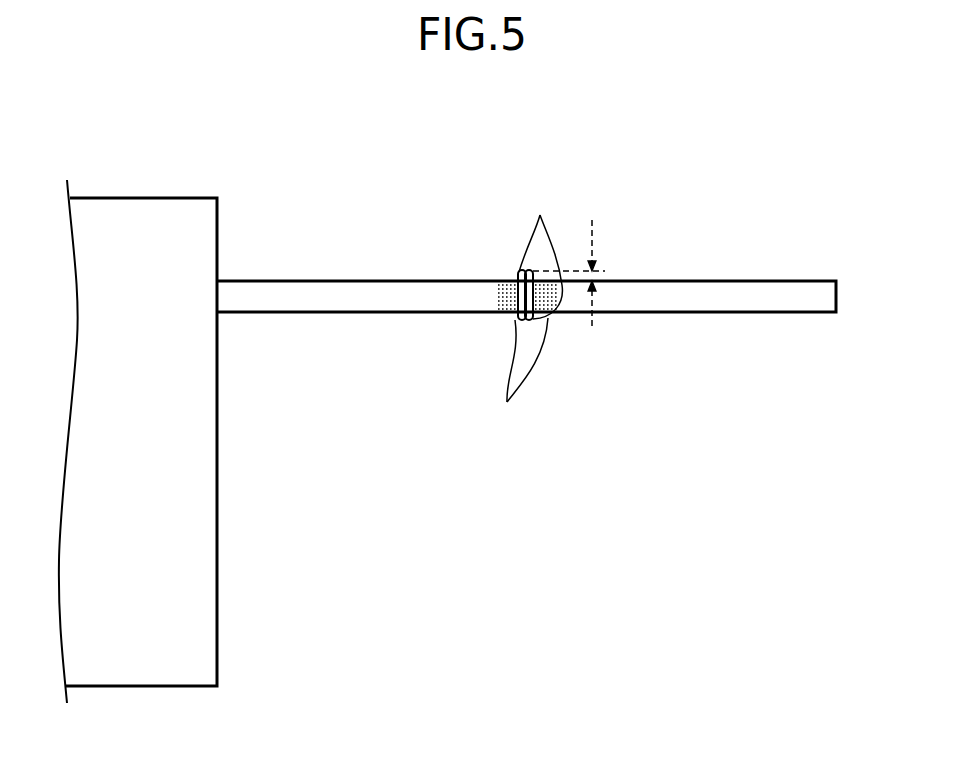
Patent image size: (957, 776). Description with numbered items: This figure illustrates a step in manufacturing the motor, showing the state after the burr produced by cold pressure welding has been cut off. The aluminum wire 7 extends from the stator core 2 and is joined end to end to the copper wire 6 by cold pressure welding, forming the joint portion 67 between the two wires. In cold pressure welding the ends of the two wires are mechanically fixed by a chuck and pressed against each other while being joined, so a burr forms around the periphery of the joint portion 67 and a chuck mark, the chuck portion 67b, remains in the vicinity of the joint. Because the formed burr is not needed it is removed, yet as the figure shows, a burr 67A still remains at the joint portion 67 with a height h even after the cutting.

The stator core 2 is at (174, 208).
The aluminum wire 7 is at (358, 305).
The copper wire 6 is at (795, 304).
The joint portion 67 is at (503, 282).
The burr 67A is at (567, 244).
The chuck portion 67b is at (508, 385).